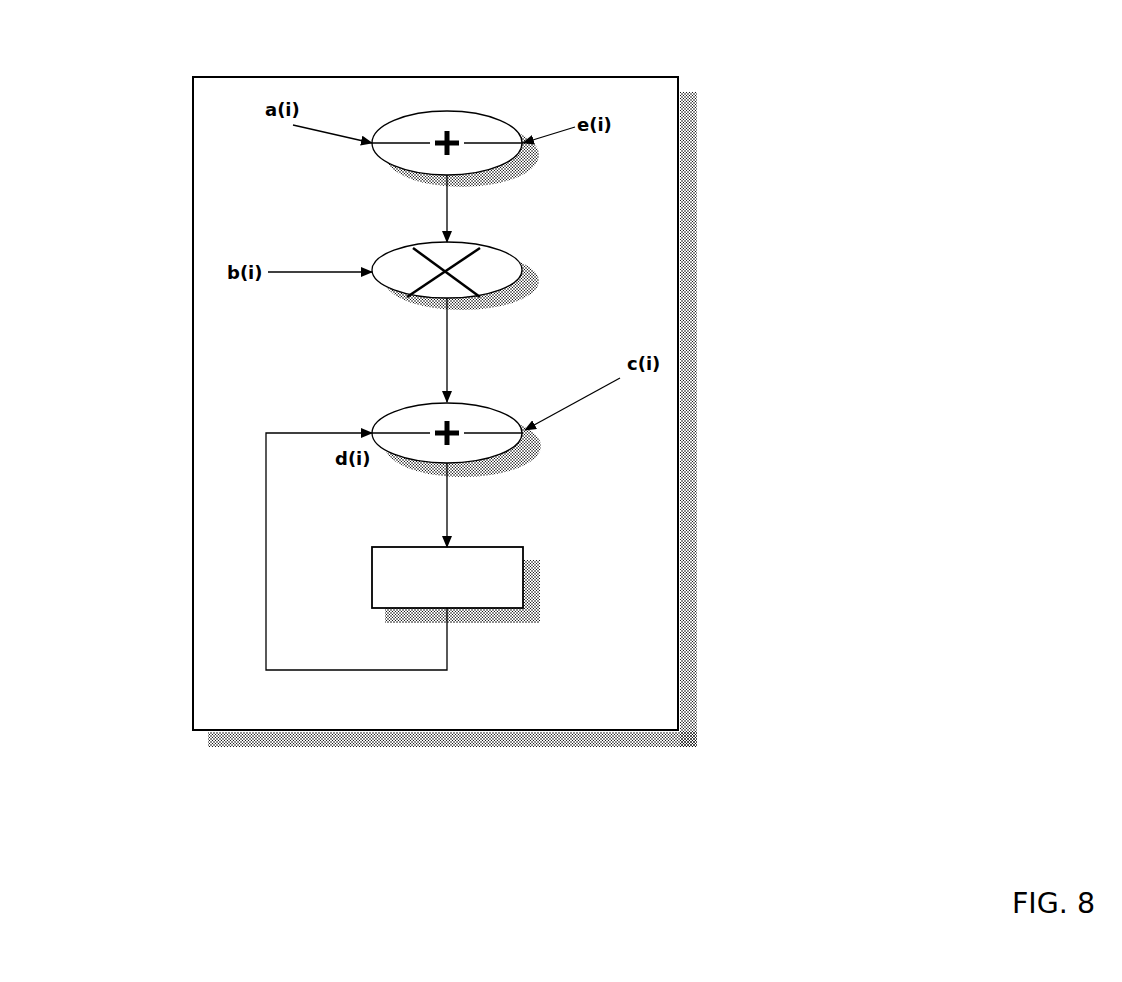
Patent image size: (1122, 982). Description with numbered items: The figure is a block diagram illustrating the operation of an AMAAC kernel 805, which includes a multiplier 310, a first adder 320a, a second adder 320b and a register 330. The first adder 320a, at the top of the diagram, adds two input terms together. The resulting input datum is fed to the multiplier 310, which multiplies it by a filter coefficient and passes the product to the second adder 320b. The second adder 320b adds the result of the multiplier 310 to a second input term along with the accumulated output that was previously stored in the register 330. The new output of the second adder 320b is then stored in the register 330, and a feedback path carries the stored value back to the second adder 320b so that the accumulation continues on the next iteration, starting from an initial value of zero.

The AMAAC kernel 805 is at (510, 77).
The first adder 320a is at (388, 160).
The multiplier 310 is at (493, 250).
The second adder 320b is at (483, 404).
The register 330 is at (498, 547).